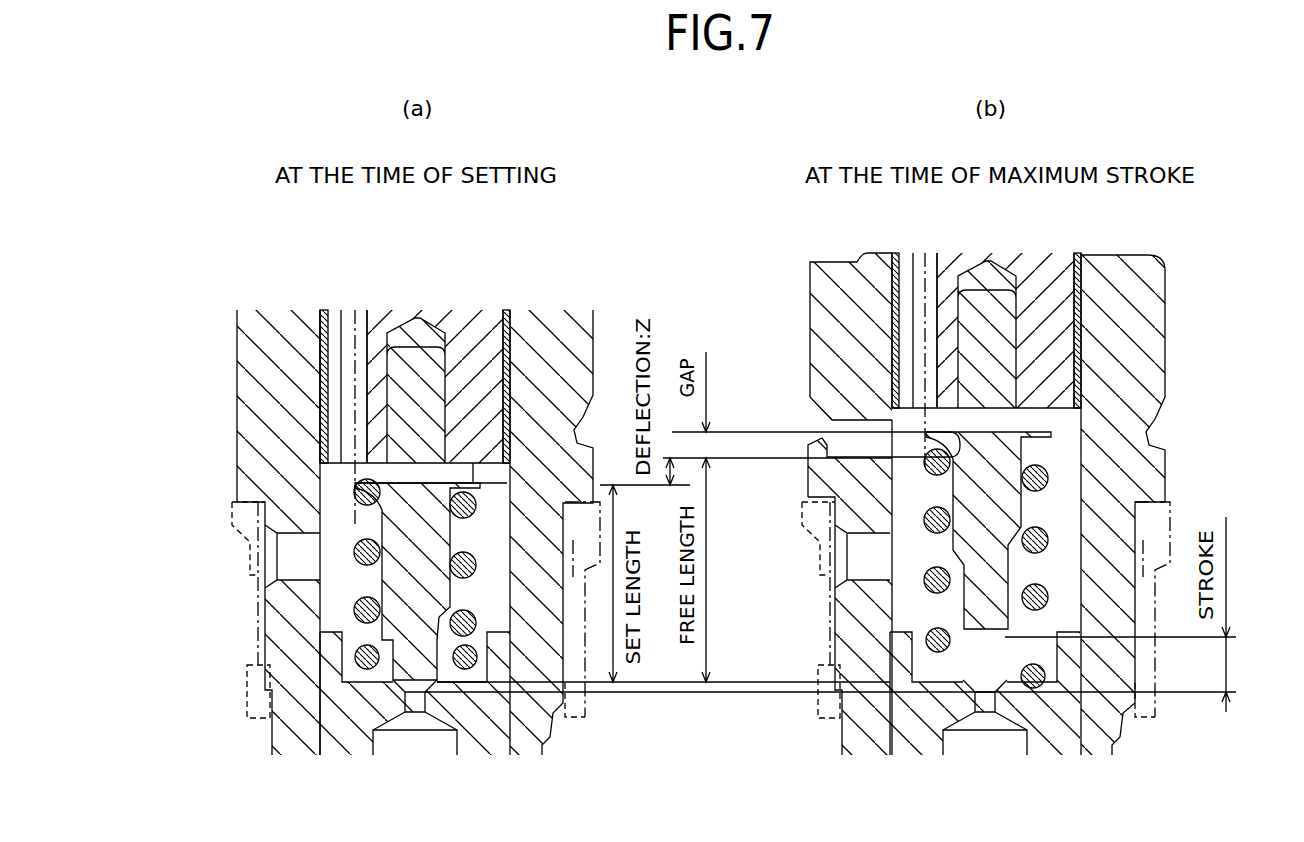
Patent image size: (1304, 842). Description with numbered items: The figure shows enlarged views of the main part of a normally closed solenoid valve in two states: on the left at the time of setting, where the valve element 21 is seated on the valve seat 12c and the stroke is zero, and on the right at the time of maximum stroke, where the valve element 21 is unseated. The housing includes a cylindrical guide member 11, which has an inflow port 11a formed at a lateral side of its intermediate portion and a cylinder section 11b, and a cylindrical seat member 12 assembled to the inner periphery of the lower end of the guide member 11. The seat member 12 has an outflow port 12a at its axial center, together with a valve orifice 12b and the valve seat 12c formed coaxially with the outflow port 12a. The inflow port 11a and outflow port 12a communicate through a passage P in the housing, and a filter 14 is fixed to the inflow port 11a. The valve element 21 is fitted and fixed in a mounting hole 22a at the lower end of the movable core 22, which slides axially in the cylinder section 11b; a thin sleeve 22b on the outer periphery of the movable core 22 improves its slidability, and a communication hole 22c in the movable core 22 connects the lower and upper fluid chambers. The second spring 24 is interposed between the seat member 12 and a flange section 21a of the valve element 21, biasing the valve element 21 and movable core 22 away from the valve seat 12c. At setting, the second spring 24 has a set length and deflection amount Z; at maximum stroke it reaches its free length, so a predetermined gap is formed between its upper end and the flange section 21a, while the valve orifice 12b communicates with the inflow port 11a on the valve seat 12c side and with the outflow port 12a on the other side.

The guide member 11 is at (247, 380).
The inflow port 11a is at (290, 557).
The cylinder section 11b is at (320, 422).
The seat member 12 is at (483, 745).
The outflow port 12a is at (402, 745).
The valve orifice 12b is at (320, 700).
The valve seat 12c is at (420, 680).
The filter 14 is at (246, 697).
The valve element 21 is at (437, 592).
The flange section 21a is at (363, 477).
The movable core 22 is at (515, 387).
The mounting hole 22a is at (447, 372).
The thin sleeve 22b is at (320, 347).
The communication hole 22c is at (352, 317).
The second spring 24 is at (360, 608).
The passage P is at (367, 643).